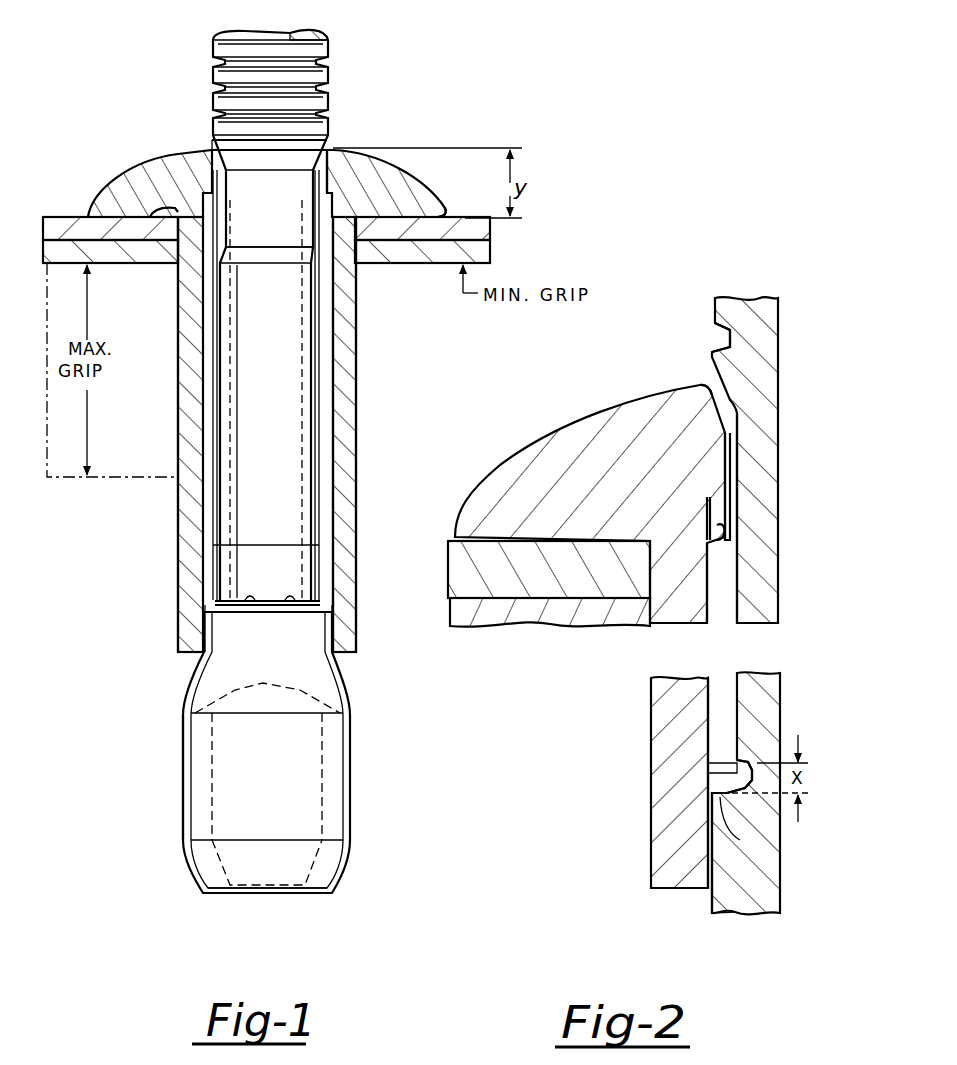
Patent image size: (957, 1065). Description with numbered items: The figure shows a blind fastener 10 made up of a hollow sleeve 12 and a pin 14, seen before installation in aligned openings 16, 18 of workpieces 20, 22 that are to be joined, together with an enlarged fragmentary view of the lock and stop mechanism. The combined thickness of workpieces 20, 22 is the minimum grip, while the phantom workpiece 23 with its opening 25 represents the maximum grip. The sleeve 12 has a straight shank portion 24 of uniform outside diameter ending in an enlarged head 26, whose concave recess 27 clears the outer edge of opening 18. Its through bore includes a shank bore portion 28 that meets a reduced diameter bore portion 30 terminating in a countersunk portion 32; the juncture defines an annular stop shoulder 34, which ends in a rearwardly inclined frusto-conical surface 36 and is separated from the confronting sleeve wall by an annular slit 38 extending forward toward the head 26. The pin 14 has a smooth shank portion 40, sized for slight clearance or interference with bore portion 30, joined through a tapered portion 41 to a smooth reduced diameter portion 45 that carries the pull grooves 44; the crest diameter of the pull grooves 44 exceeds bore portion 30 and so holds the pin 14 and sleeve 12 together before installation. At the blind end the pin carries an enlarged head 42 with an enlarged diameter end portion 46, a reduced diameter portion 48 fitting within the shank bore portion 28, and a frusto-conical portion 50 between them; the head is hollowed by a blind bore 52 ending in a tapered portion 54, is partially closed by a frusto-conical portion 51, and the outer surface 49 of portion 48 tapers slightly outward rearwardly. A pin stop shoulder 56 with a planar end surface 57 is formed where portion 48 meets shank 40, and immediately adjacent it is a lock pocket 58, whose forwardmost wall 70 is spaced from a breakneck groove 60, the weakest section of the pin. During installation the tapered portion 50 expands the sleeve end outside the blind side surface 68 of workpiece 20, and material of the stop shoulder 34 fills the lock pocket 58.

In FIG. 1, the blind fastener 10 is at (378, 586).
In FIG. 2, the blind fastener 10 is at (634, 657).
In FIG. 1, the hollow sleeve 12 is at (347, 537).
In FIG. 2, the hollow sleeve 12 is at (655, 719).
In FIG. 1, the pin 14 is at (228, 532).
In FIG. 2, the pin 14 is at (768, 368).
In FIG. 1, the opening 16 is at (177, 290).
In FIG. 1, the opening 18 is at (178, 217).
In FIG. 1, the workpiece 20 is at (127, 262).
In FIG. 1, the workpiece 22 is at (88, 240).
In FIG. 1, the workpiece 23 is at (113, 480).
In FIG. 1, the shank portion 24 is at (356, 412).
In FIG. 2, the shank portion 24 is at (653, 888).
In FIG. 1, the opening 25 is at (180, 387).
In FIG. 1, the enlarged head 26 is at (335, 178).
In FIG. 2, the enlarged head 26 is at (540, 565).
In FIG. 1, the concave recess 27 is at (173, 209).
In FIG. 1, the shank bore portion 28 is at (333, 372).
In FIG. 2, the shank bore portion 28 is at (710, 693).
In FIG. 1, the reduced diameter bore portion 30 is at (312, 192).
In FIG. 1, the countersunk portion 32 is at (228, 100).
In FIG. 2, the countersunk portion 32 is at (705, 390).
In FIG. 1, the stop shoulder 34 is at (212, 207).
In FIG. 2, the stop shoulder 34 is at (733, 522).
In FIG. 1, the frusto-conical surface 36 is at (333, 245).
In FIG. 2, the frusto-conical surface 36 is at (707, 533).
In FIG. 1, the annular slit 38 is at (325, 200).
In FIG. 2, the annular slit 38 is at (708, 515).
In FIG. 1, the pin shank portion 40 is at (240, 410).
In FIG. 2, the pin shank portion 40 is at (760, 690).
In FIG. 1, the tapered portion 41 is at (270, 256).
In FIG. 1, the enlarged head 42 is at (352, 706).
In FIG. 2, the enlarged head 42 is at (776, 900).
In FIG. 1, the pull grooves 44 is at (318, 42).
In FIG. 2, the pull grooves 44 is at (722, 328).
In FIG. 1, the reduced diameter portion 45 is at (260, 195).
In FIG. 1, the enlarged diameter end portion 46 is at (344, 832).
In FIG. 1, the reduced diameter portion 48 is at (334, 640).
In FIG. 2, the reduced diameter portion 48 is at (718, 848).
In FIG. 2, the radially outer surface 49 is at (713, 820).
In FIG. 1, the frusto-conical portion 50 is at (187, 693).
In FIG. 2, the frusto-conical portion 50 is at (700, 902).
In FIG. 1, the frusto-conical portion 51 is at (340, 882).
In FIG. 1, the blind bore 52 is at (322, 770).
In FIG. 1, the tapered portion 54 is at (243, 695).
In FIG. 1, the pin stop shoulder 56 is at (287, 607).
In FIG. 2, the pin stop shoulder 56 is at (720, 800).
In FIG. 1, the end surface 57 is at (255, 600).
In FIG. 2, the end surface 57 is at (730, 800).
In FIG. 1, the lock pocket 58 is at (288, 600).
In FIG. 2, the lock pocket 58 is at (735, 775).
In FIG. 1, the breakneck groove 60 is at (297, 515).
In FIG. 1, the blind side surface 68 is at (390, 264).
In FIG. 2, the forwardmost wall 70 is at (740, 760).